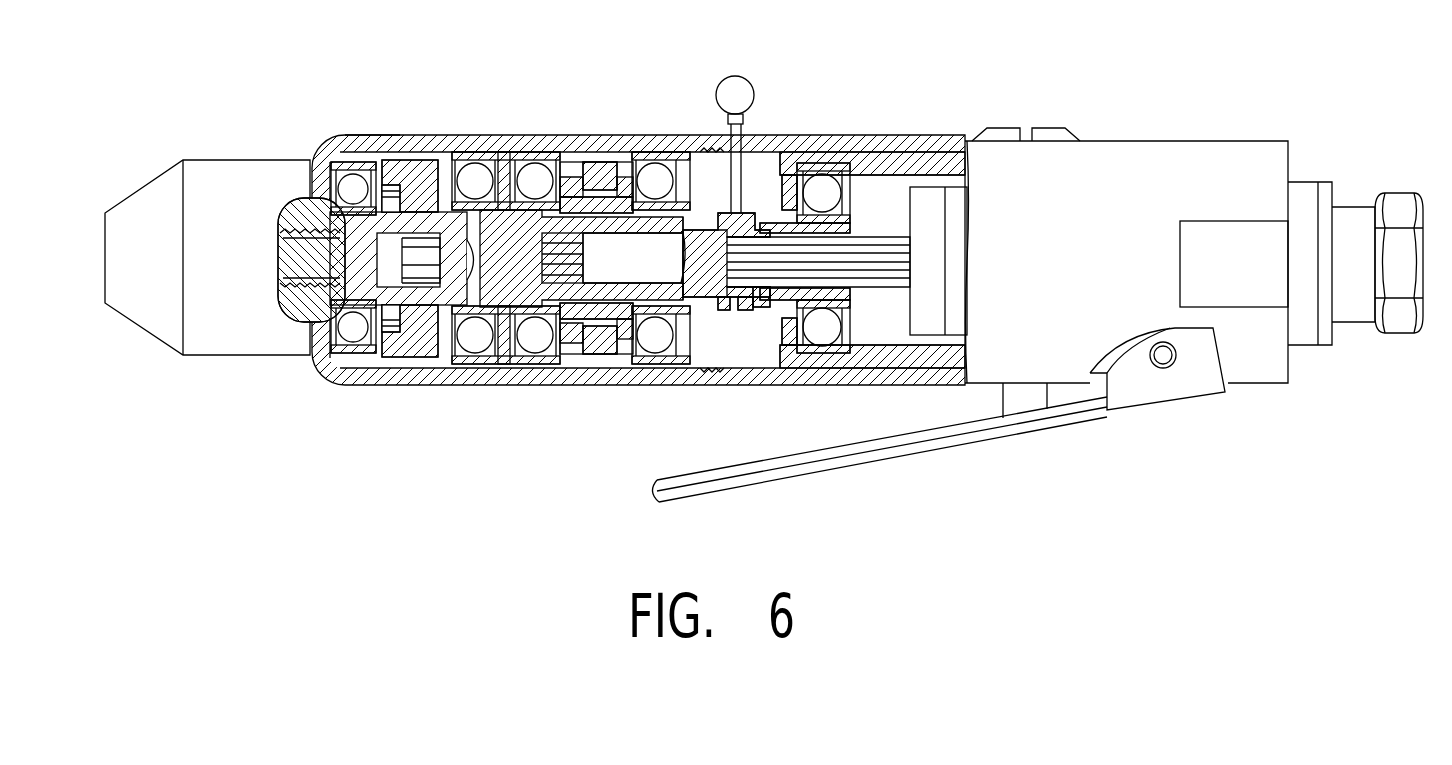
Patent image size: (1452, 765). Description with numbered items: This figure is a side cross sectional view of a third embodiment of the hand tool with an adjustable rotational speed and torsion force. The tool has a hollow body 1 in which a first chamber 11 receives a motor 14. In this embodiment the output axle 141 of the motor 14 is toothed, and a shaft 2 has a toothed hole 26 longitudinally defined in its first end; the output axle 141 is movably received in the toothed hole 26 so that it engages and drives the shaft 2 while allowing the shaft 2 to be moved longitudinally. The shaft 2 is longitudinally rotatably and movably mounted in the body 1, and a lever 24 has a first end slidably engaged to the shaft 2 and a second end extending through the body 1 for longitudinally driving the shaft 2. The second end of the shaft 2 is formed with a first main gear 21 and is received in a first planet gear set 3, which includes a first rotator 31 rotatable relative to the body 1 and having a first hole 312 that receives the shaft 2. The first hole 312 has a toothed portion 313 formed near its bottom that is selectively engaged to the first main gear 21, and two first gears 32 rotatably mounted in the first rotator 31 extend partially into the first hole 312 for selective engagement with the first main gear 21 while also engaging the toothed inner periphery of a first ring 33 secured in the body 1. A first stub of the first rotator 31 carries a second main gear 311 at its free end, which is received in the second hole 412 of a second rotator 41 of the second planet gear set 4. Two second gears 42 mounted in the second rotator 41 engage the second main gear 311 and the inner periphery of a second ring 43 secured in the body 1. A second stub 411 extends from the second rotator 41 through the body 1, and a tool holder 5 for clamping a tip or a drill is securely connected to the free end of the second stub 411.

The hollow body 1 is at (812, 118).
The first chamber 11 is at (925, 142).
The motor 14 is at (940, 260).
The output axle 141 is at (880, 200).
The shaft 2 is at (683, 240).
The first main gear 21 is at (571, 245).
The lever 24 is at (748, 95).
The toothed hole 26 is at (750, 272).
The first planet gear set 3 is at (563, 135).
The first rotator 31 is at (516, 362).
The second main gear 311 is at (418, 273).
The first hole 312 is at (648, 292).
The toothed portion 313 is at (565, 282).
The first gears 32 is at (627, 160).
The first ring 33 is at (592, 165).
The second planet gear set 4 is at (407, 135).
The second rotator 41 is at (330, 318).
The second stub 411 is at (290, 325).
The second hole 412 is at (388, 240).
The second gears 42 is at (446, 170).
The second ring 43 is at (382, 353).
The tool holder 5 is at (236, 172).